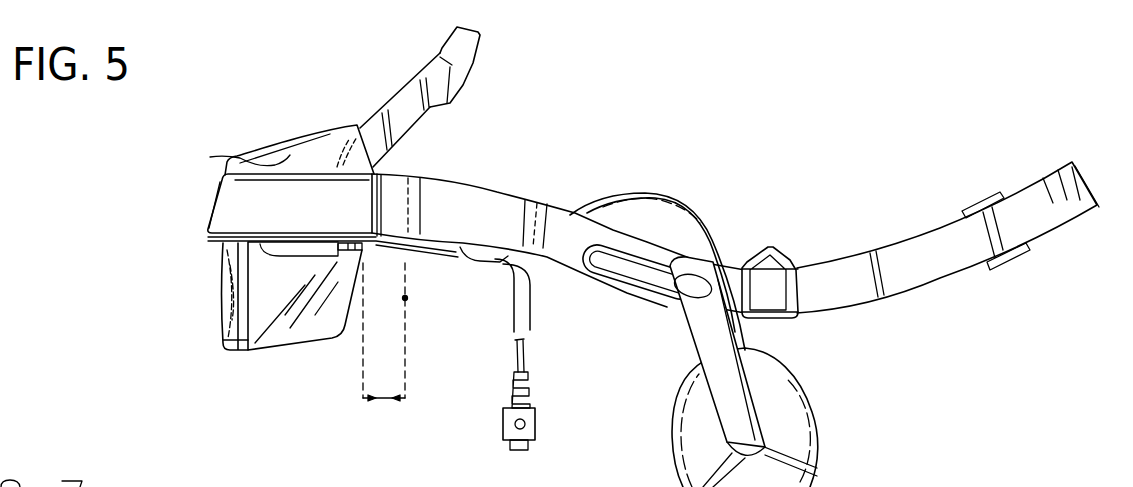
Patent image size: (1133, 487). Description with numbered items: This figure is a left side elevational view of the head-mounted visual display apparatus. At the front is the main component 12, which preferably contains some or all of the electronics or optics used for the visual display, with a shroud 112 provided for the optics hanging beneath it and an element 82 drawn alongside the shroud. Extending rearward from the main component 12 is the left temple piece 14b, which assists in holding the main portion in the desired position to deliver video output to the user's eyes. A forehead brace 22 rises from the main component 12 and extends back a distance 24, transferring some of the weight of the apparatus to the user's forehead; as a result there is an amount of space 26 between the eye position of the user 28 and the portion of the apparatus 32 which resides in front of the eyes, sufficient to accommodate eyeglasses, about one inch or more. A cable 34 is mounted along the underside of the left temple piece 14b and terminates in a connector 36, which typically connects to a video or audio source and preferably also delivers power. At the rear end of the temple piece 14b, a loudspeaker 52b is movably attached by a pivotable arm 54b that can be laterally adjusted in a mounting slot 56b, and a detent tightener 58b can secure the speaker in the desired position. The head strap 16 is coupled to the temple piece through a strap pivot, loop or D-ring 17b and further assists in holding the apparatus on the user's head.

The main component 12 is at (345, 122).
The left temple piece 14b is at (500, 230).
The strap 16 is at (935, 238).
The right strap pivot, loop or D-ring 17b is at (782, 250).
The forehead brace 22 is at (470, 48).
The distance 24 is at (432, 62).
The space 26 is at (384, 398).
The eye position of the user 28 is at (405, 298).
The portion of the apparatus 32 is at (360, 252).
The cable 34 is at (530, 293).
The connector 36 is at (532, 413).
The right loudspeaker 52b is at (800, 442).
The pivotable arm 54b is at (700, 350).
The mounting slot 56b is at (622, 271).
The detent tightener 58b is at (686, 258).
The eyepiece 82 is at (228, 272).
The shroud 112 is at (323, 333).